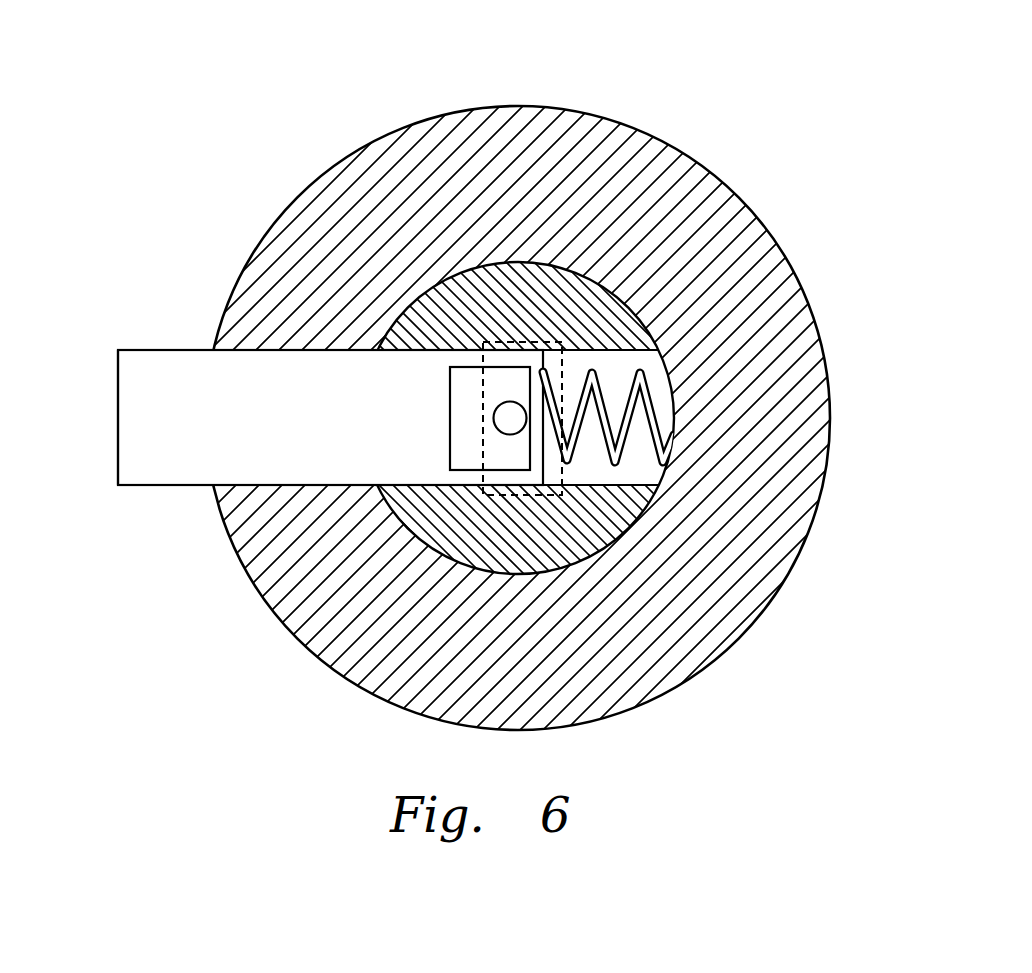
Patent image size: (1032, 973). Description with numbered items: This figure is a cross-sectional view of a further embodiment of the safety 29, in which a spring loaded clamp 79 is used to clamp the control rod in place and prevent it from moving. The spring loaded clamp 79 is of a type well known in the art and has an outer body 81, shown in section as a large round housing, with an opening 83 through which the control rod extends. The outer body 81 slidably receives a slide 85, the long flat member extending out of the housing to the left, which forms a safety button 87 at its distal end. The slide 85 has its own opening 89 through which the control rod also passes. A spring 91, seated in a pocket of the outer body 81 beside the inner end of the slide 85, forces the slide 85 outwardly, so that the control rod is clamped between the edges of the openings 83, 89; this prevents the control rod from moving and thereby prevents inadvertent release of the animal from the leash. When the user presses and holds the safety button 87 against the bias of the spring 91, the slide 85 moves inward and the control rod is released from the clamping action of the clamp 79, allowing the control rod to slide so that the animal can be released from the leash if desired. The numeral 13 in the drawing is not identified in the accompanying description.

The lock cylinder housing 13 is at (813, 320).
The safety 29 is at (172, 272).
The spring loaded clamp 79 is at (348, 540).
The outer body 81 is at (535, 297).
The opening 83 is at (563, 362).
The slide 85 is at (327, 388).
The safety button 87 is at (163, 400).
The opening 89 is at (450, 418).
The spring 91 is at (652, 418).